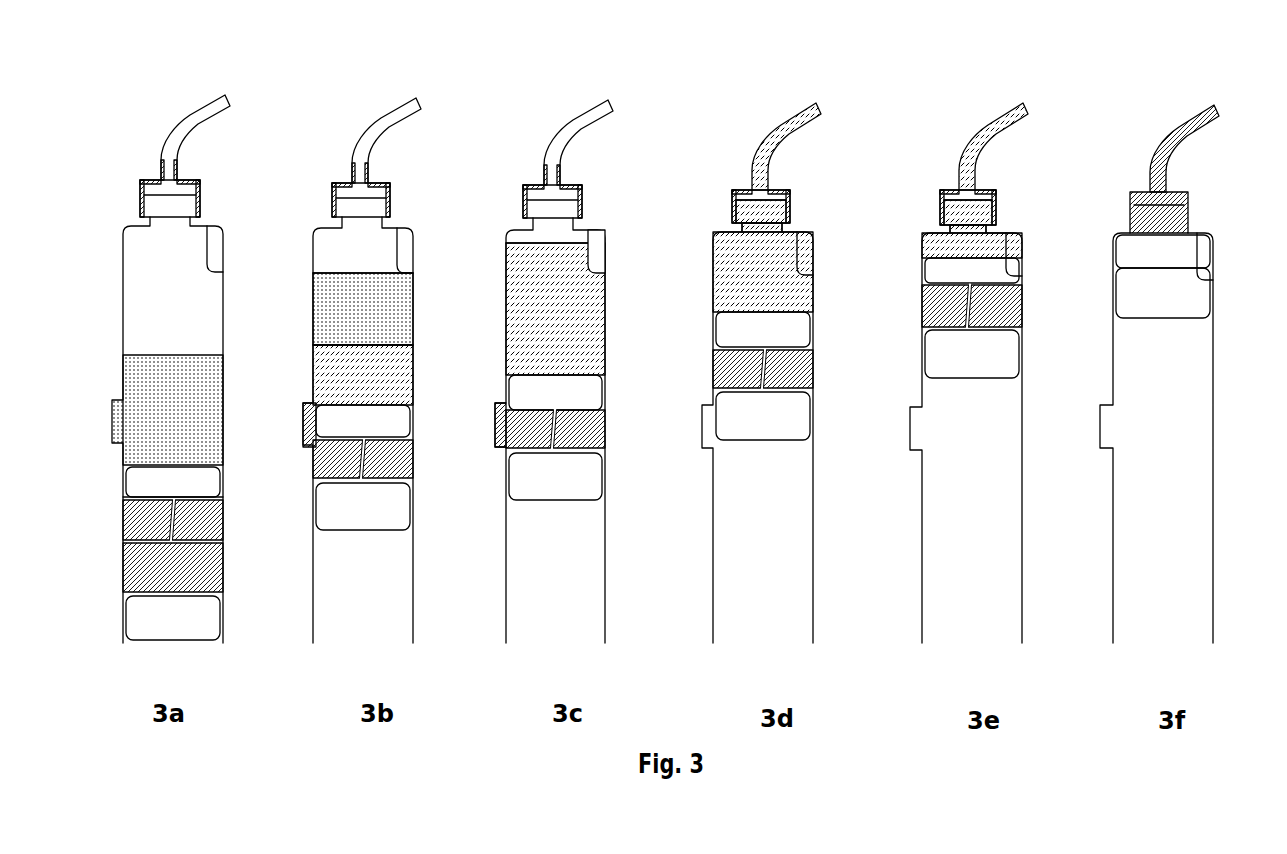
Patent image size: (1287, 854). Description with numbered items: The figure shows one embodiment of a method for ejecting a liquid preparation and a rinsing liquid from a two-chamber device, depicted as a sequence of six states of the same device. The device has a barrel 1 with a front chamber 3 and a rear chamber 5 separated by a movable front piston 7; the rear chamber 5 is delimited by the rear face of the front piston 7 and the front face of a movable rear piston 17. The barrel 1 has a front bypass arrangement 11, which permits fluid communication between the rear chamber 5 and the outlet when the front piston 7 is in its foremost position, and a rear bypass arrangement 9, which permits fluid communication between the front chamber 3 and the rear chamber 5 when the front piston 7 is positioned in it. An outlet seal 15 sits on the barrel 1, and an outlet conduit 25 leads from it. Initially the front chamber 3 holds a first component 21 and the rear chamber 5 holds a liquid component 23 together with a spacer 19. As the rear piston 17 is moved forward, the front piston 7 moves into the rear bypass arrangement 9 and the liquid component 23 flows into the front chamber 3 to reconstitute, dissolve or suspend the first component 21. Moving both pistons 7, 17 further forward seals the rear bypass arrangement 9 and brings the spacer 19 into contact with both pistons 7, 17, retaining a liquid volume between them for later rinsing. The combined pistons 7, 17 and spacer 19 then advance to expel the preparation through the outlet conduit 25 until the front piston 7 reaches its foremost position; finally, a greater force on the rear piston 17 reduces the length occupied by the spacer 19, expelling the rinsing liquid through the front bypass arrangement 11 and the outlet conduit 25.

The barrel 1 is at (223, 287).
The front chamber 3 is at (207, 325).
The rear chamber 5 is at (222, 563).
The front piston 7 is at (205, 483).
The rear bypass arrangement 9 is at (113, 400).
The front bypass arrangement 11 is at (220, 223).
The outlet seal 15 is at (192, 182).
The rear piston 17 is at (203, 625).
The spacer 19 is at (177, 503).
The first component 21 is at (195, 418).
The liquid component 23 is at (142, 577).
The outlet conduit 25 is at (177, 123).